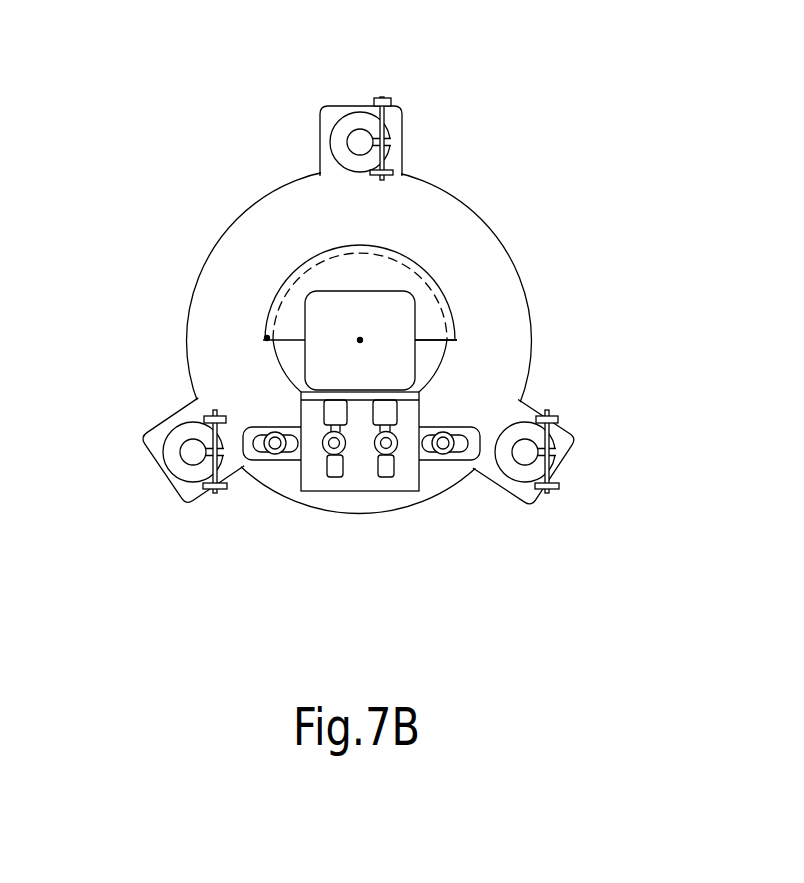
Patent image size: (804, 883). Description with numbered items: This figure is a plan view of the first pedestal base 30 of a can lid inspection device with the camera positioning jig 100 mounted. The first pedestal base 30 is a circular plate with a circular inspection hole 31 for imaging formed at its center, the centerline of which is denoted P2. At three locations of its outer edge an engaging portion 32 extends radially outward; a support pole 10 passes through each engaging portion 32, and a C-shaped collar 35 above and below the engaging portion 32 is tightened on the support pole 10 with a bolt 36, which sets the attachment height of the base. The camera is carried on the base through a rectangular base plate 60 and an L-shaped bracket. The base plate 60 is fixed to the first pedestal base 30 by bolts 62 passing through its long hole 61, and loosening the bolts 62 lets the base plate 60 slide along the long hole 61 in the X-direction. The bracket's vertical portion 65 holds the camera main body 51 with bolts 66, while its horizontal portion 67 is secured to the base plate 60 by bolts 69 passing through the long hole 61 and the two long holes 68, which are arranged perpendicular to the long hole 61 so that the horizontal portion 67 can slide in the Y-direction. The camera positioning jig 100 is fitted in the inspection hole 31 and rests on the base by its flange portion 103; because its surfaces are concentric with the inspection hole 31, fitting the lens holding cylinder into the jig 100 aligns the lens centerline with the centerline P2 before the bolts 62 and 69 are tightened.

The support pole 10 is at (360, 140).
The first pedestal base 30 is at (450, 233).
The inspection hole 31 is at (427, 333).
The engaging portion 32 is at (323, 108).
The C-shaped collar 35 is at (335, 142).
The bolt 36 is at (383, 98).
The main body 51 is at (427, 322).
The base plate 60 is at (252, 462).
The long hole 61 is at (295, 446).
The bolt 62 is at (275, 455).
The vertical portion 65 is at (266, 338).
The bolt 66 is at (333, 412).
The horizontal portion 67 is at (312, 477).
The long hole 68 is at (335, 473).
The bolt 69 is at (341, 448).
The camera positioning jig 100 is at (393, 320).
The flange portion 103 is at (403, 253).
The centerline of the inspection hole P2 is at (360, 340).